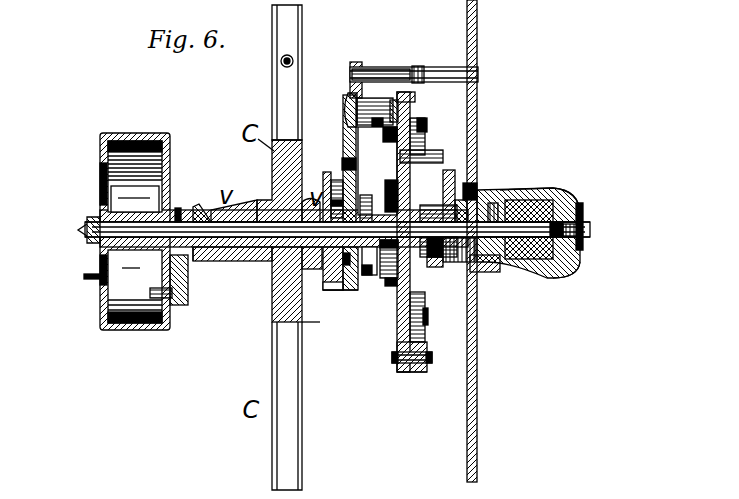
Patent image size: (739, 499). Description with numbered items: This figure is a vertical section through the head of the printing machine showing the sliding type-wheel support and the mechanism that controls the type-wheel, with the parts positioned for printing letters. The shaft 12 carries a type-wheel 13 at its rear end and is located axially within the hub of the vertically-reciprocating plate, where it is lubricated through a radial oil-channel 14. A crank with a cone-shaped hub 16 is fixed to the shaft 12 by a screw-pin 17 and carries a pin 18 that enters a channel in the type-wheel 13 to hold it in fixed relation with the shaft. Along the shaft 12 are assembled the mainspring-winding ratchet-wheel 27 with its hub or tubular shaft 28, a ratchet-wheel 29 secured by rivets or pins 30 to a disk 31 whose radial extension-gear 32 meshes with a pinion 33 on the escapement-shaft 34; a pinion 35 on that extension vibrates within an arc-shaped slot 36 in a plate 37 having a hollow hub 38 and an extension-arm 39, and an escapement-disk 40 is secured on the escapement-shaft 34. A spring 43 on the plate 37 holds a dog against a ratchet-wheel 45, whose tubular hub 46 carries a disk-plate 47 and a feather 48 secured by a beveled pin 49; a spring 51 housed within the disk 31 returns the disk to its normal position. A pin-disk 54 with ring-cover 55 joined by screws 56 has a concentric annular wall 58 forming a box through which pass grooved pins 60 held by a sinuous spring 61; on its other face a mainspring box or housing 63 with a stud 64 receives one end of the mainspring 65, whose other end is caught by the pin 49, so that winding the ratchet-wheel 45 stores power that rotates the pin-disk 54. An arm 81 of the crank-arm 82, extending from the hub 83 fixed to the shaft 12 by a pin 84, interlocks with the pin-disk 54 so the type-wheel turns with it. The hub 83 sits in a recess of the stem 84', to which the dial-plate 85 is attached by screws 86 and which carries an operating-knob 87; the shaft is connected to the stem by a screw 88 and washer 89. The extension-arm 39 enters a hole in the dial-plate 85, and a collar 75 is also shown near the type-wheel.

The shaft 12 is at (84, 231).
The type-wheel 13 is at (136, 330).
The radial oil-channel 14 is at (255, 214).
The cone-shaped hub 16 is at (199, 212).
The screw-pin 17 is at (179, 214).
The pin 18 is at (152, 292).
The mainspring-winding ratchet-wheel 27 is at (303, 333).
The hub or tubular shaft 28 is at (271, 308).
The ratchet-wheel 29 is at (318, 292).
The rivets or pins 30 is at (330, 178).
The disk 31 is at (346, 292).
The radial extension-gear 32 is at (343, 110).
The pinion 33 is at (358, 90).
The escapement-shaft 34 is at (368, 95).
The pinion 35 is at (345, 150).
The arc-shaped slot 36 is at (378, 171).
The plate 37 is at (356, 292).
The hollow hub 38 is at (345, 100).
The extension-arm 39 is at (400, 90).
The escapement-disk 40 is at (360, 100).
The spring 43 is at (368, 276).
The ratchet-wheel 45 is at (368, 195).
The tubular hub 46 is at (372, 278).
The disk-plate 47 is at (390, 287).
The feather 48 is at (562, 188).
The pin 49 is at (420, 187).
The spring 51 is at (270, 264).
The pin-disk 54 is at (428, 362).
The ring-cover 55 is at (402, 270).
The screws 56 is at (423, 108).
The concentric annular wall 58 is at (420, 300).
The pins 60 is at (440, 100).
The sinuous spring 61 is at (410, 374).
The mainspring box or housing 63 is at (410, 282).
The stud 64 is at (420, 165).
The mainspring 65 is at (402, 268).
The collar 75 is at (188, 264).
The arm 81 is at (446, 168).
The crank-arm 82 is at (446, 176).
The hub 83 is at (452, 265).
The pin 84 is at (528, 188).
The stem 84' is at (554, 257).
The dial-plate 85 is at (477, 30).
The screws 86 is at (477, 196).
The operating-knob 87 is at (560, 278).
The screw 88 is at (584, 233).
The washer 89 is at (584, 214).